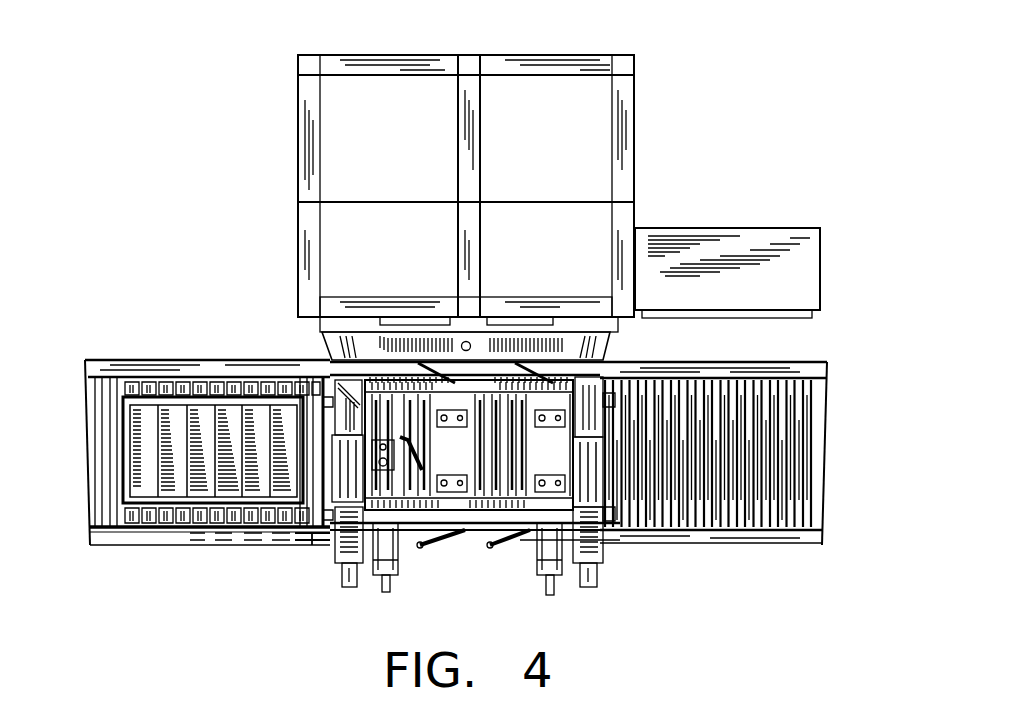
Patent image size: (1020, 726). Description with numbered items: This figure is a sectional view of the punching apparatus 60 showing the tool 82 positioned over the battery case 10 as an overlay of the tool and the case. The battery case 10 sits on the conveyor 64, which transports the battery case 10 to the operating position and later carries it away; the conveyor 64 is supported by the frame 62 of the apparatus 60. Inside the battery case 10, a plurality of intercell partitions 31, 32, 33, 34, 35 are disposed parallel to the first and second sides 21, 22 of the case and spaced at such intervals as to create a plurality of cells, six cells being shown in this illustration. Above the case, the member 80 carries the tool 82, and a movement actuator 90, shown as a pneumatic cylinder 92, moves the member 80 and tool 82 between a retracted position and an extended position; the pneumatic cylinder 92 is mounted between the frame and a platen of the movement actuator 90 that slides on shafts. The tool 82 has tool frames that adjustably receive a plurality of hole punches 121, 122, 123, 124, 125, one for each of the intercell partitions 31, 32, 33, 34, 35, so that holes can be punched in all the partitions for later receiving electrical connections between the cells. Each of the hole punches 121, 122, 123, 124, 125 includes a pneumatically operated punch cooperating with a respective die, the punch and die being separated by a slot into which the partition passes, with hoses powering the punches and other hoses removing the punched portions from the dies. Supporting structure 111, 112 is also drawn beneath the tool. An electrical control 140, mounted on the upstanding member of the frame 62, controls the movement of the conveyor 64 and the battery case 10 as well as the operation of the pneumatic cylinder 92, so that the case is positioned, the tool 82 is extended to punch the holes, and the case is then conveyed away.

The battery case 10 is at (140, 440).
The first side 21 is at (120, 478).
The second side 22 is at (302, 543).
The intercell partition 31 is at (97, 528).
The intercell partition 32 is at (197, 533).
The intercell partition 33 is at (223, 533).
The intercell partition 34 is at (253, 533).
The intercell partition 35 is at (280, 533).
The apparatus 60 is at (647, 57).
The frame 62 is at (633, 150).
The conveyor 64 is at (127, 533).
The member 80 is at (343, 328).
The tool 82 is at (607, 547).
The movement actuator 90 is at (500, 287).
The pneumatic cylinder 92 is at (461, 344).
The left support pillar 111 is at (357, 587).
The right support pillar 112 is at (587, 587).
The hole punch 121 is at (357, 398).
The hole punch 122 is at (467, 533).
The hole punch 123 is at (500, 533).
The hole punch 124 is at (440, 400).
The hole punch 125 is at (567, 400).
The electrical control 140 is at (750, 240).